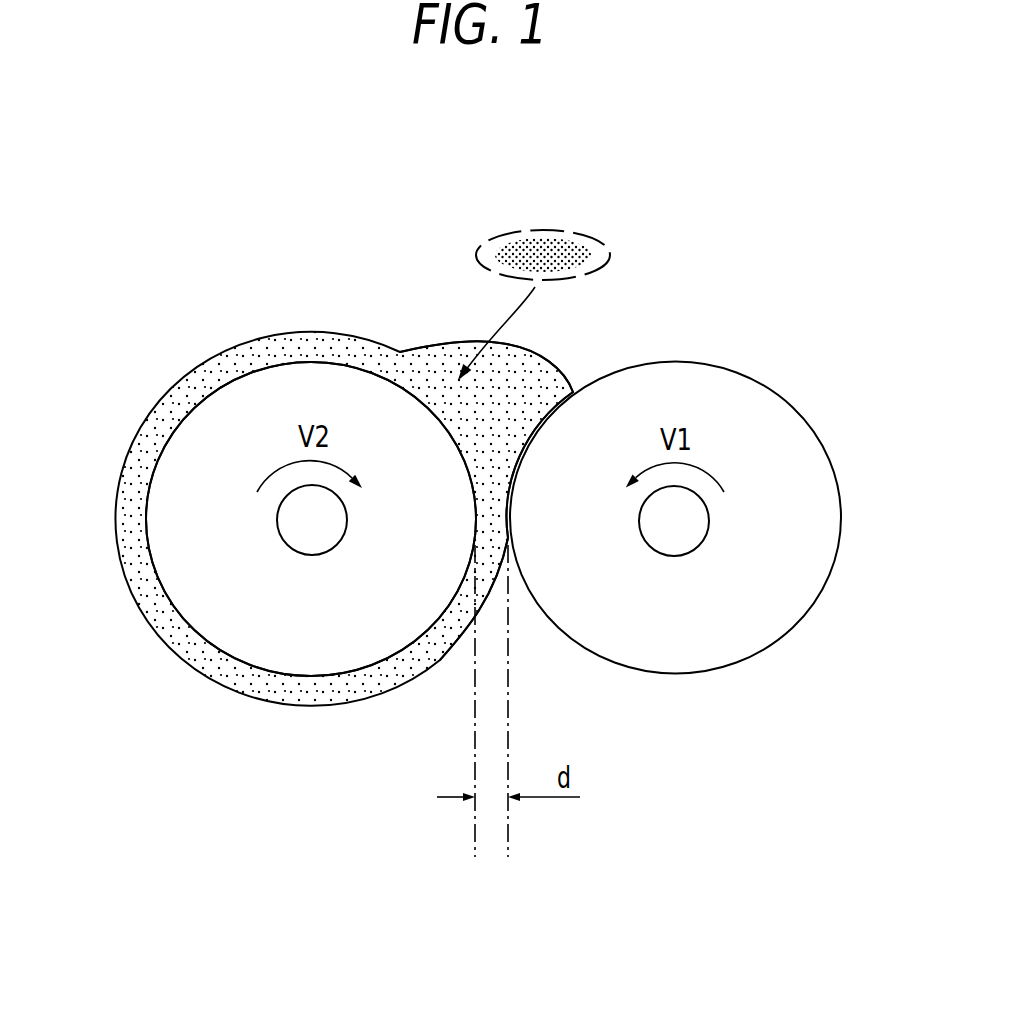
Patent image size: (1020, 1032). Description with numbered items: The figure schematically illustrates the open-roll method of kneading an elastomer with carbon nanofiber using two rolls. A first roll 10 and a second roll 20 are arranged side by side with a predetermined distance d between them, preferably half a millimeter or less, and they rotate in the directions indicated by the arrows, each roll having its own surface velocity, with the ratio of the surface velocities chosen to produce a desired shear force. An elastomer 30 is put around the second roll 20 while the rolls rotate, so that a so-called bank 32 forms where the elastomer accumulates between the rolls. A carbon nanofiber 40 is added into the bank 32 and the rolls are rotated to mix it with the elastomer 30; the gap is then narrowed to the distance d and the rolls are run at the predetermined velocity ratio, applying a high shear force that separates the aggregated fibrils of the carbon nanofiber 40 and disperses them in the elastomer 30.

The first roll 10 is at (827, 523).
The second roll 20 is at (168, 525).
The elastomer 30 is at (247, 355).
The bank 32 is at (538, 363).
The carbon nanofiber 40 is at (567, 230).